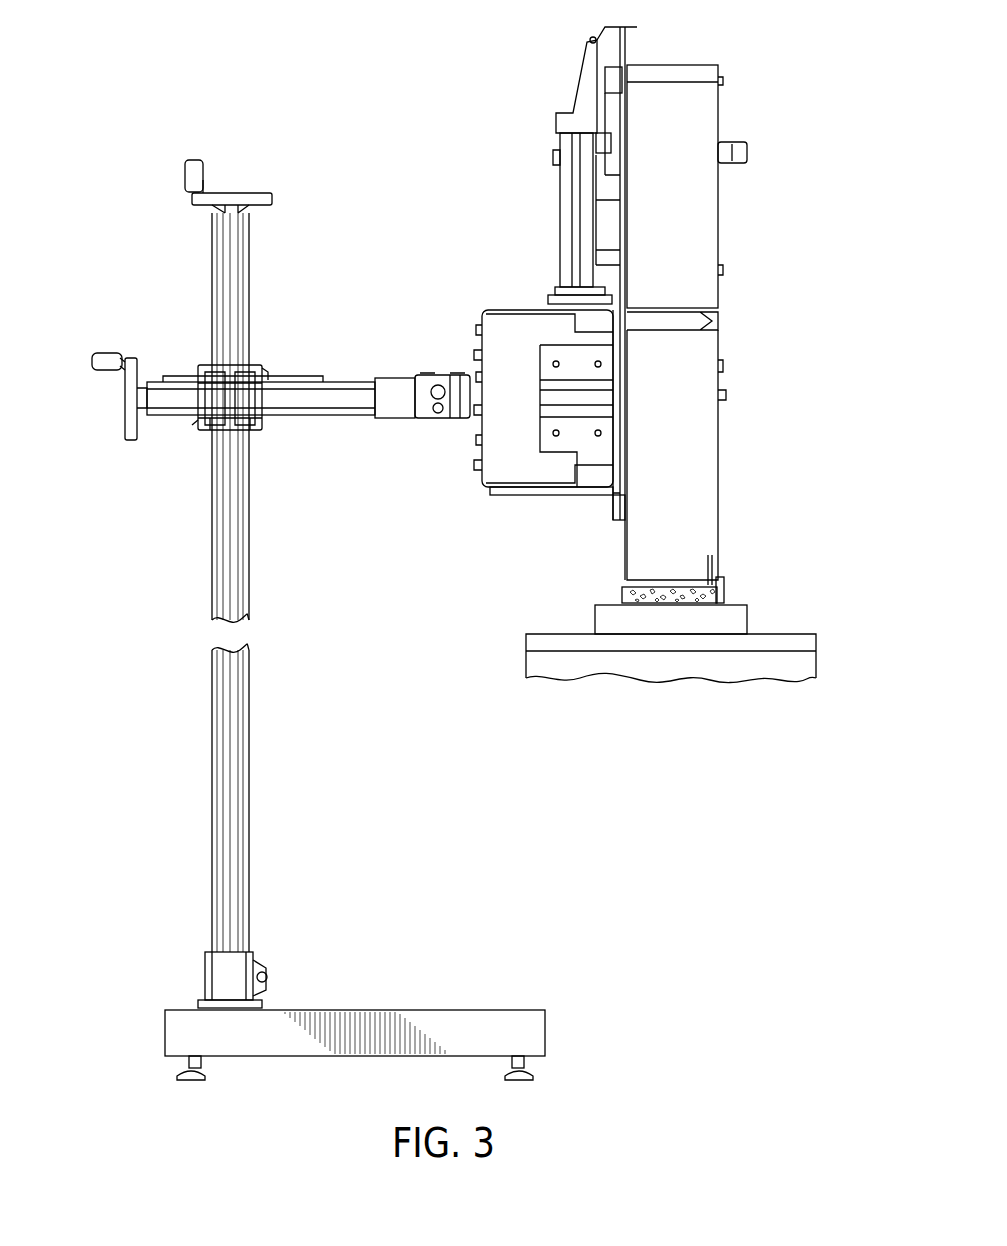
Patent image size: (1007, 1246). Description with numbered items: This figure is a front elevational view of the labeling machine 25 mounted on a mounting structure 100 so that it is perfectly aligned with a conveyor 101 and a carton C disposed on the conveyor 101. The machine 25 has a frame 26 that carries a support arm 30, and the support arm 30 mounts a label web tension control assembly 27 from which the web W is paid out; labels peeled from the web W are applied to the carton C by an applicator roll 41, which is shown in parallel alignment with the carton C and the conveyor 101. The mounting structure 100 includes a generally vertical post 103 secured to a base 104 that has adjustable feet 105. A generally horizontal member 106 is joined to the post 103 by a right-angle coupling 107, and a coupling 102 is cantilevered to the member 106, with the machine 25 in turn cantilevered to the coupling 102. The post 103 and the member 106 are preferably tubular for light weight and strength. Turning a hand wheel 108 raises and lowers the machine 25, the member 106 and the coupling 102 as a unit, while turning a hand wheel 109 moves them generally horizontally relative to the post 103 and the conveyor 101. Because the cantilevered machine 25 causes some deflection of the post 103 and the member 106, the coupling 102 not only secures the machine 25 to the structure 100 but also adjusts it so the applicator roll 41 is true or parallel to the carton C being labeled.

The machine 25 is at (750, 216).
The frame 26 is at (522, 464).
The label web tension control assembly 27 is at (574, 76).
The support arm 30 is at (552, 218).
The applicator roll 41 is at (656, 582).
The mounting structure 100 is at (285, 355).
The conveyor 101 is at (538, 626).
The coupling 102 is at (428, 428).
The post 103 is at (250, 612).
The base 104 is at (362, 1028).
The adjustable feet 105 is at (178, 1072).
The horizontal member 106 is at (330, 418).
The right-angle coupling 107 is at (218, 378).
The hand wheel 108 is at (236, 192).
The hand wheel 109 is at (118, 410).
The web W is at (695, 120).
The carton C is at (752, 623).